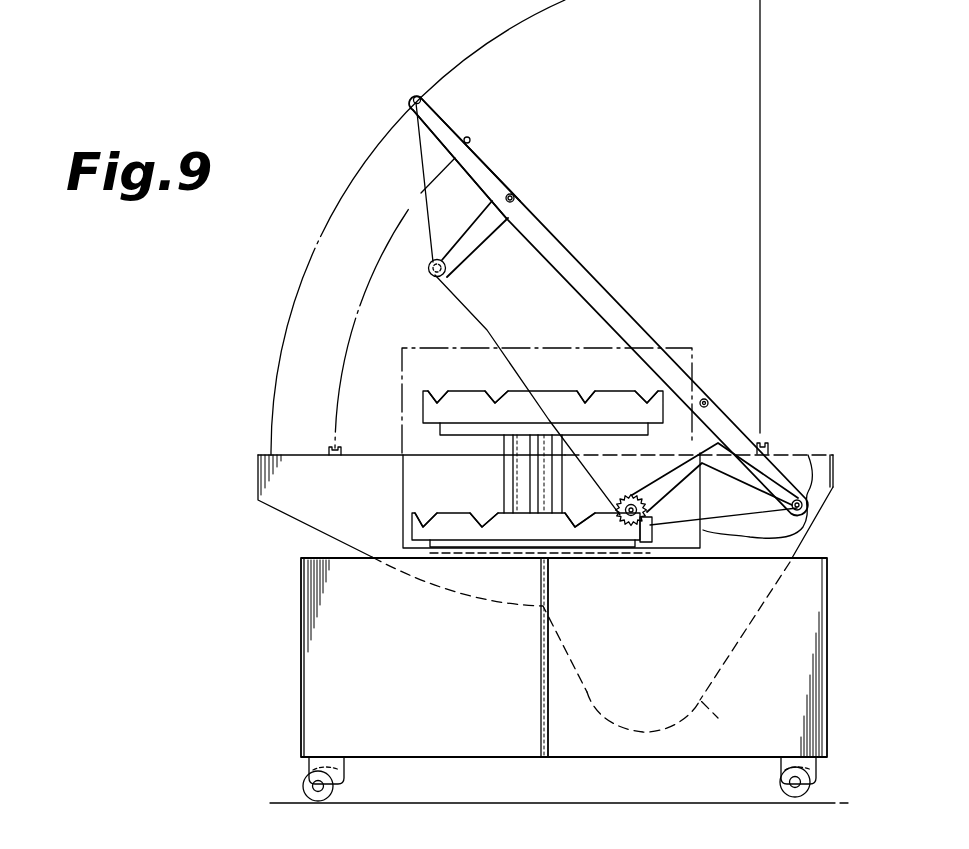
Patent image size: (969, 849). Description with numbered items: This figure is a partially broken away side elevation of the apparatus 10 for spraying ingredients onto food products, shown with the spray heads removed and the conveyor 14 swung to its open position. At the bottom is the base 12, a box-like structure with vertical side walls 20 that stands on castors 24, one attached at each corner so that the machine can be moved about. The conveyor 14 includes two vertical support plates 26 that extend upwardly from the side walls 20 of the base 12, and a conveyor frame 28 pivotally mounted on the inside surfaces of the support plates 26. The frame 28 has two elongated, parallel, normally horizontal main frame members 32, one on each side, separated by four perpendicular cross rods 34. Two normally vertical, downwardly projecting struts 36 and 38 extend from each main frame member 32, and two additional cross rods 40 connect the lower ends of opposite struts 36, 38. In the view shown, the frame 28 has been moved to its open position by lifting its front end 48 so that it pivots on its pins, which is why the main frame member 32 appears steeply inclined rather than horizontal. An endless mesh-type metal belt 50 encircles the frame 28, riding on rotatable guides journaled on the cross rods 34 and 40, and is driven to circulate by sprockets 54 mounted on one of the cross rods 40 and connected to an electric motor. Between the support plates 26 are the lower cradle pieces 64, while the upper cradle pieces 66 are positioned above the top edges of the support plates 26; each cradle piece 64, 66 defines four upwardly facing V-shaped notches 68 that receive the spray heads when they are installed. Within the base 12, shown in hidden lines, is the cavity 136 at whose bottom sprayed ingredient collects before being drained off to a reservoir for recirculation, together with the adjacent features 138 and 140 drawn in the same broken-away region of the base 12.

The apparatus 10 is at (282, 687).
The base 12 is at (792, 679).
The conveyor 14 is at (553, 212).
The side walls 20 is at (488, 657).
The castors 24 is at (338, 780).
The support plates 26 is at (275, 490).
The conveyor frame 28 is at (571, 259).
The main frame members 32 is at (485, 165).
The cross rods 34 is at (418, 96).
The strut 36 is at (476, 243).
The strut 38 is at (673, 477).
The cross rods 40 is at (433, 275).
The front end 48 is at (440, 122).
The belt 50 is at (472, 318).
The sprockets 54 is at (645, 545).
The lower cradle pieces 64 is at (412, 525).
The upper cradle pieces 66 is at (425, 410).
The notches 68 is at (490, 400).
The cavity 136 is at (724, 595).
The cable 138 is at (676, 715).
The cable 140 is at (470, 594).